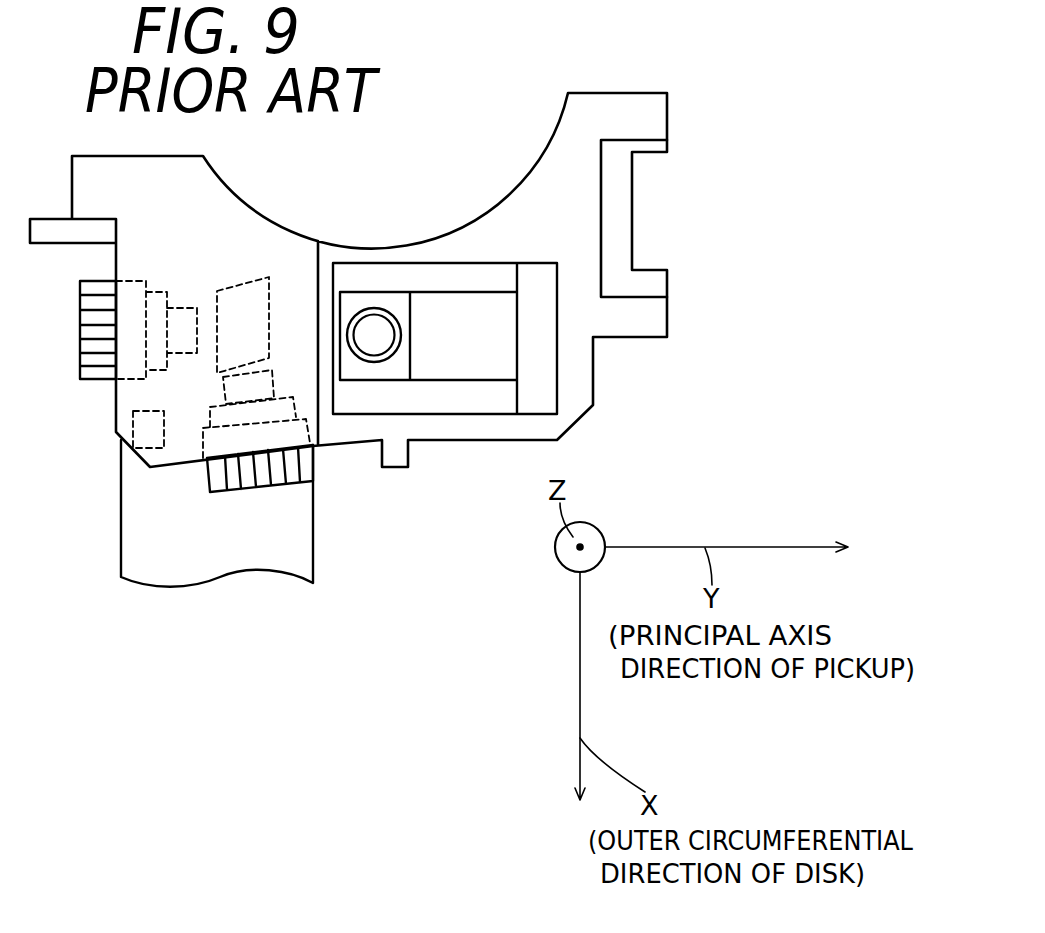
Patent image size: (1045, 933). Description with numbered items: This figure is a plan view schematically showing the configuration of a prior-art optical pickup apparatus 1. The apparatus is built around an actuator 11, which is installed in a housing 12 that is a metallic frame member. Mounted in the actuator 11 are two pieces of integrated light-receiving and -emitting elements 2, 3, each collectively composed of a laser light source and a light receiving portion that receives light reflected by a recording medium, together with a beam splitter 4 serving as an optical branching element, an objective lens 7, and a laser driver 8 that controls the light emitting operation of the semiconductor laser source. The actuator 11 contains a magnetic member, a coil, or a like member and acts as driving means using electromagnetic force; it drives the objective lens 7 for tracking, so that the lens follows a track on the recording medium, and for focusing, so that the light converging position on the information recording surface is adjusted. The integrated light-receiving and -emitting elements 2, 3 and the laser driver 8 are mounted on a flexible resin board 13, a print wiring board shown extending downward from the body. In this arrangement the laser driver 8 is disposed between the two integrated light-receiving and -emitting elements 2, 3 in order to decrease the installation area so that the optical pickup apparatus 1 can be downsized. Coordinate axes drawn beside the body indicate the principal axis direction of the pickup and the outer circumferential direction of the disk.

The optical pickup apparatus 1 is at (461, 140).
The integrated light-receiving and -emitting element 2 is at (113, 385).
The integrated light-receiving and -emitting element 3 is at (318, 453).
The beam splitter 4 is at (248, 292).
The objective lens 7 is at (380, 323).
The laser driver 8 is at (133, 447).
The actuator 11 is at (493, 400).
The housing 12 is at (585, 122).
The flexible resin board 13 is at (290, 540).